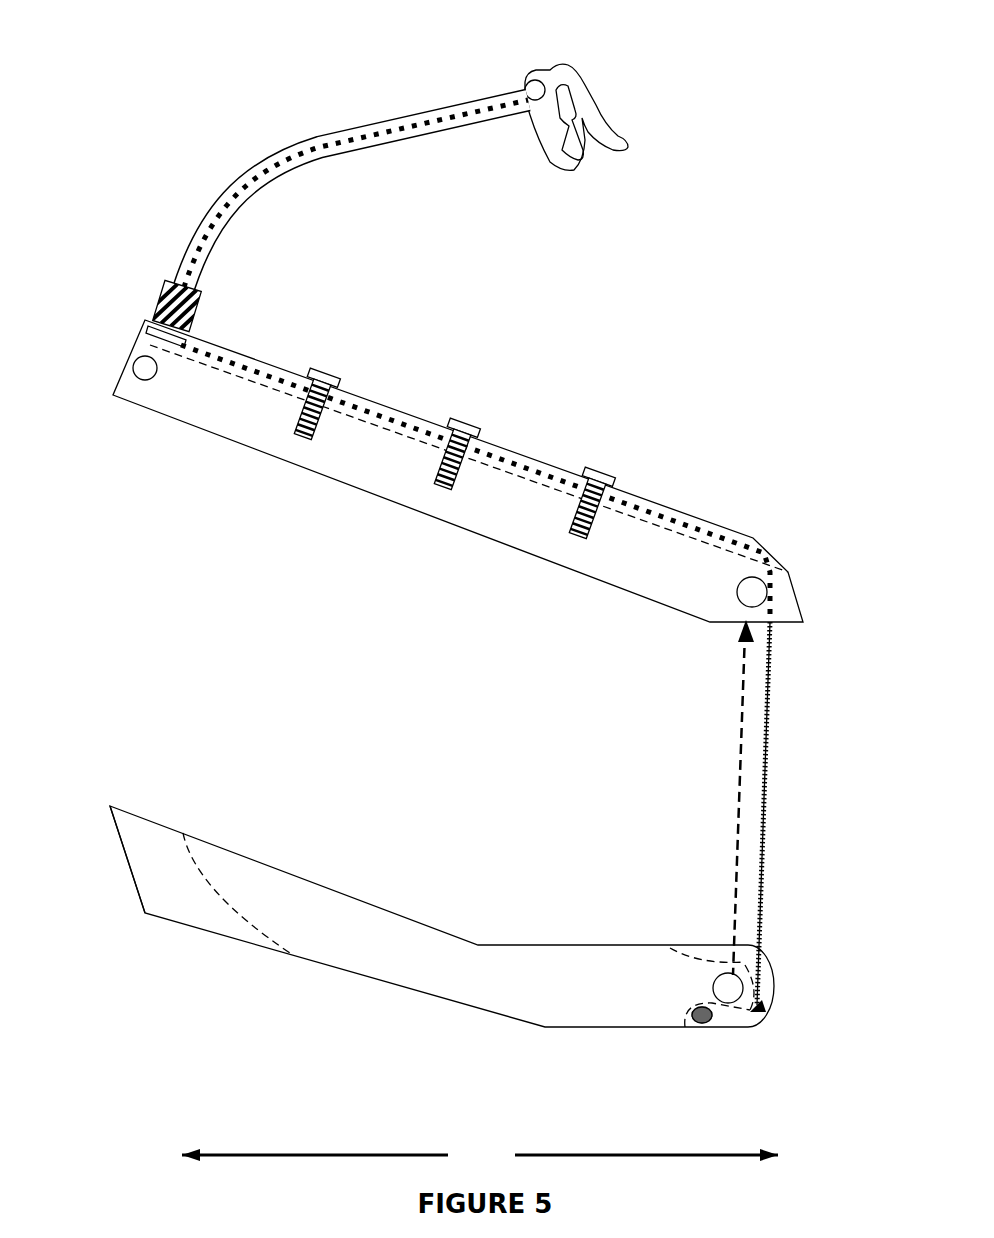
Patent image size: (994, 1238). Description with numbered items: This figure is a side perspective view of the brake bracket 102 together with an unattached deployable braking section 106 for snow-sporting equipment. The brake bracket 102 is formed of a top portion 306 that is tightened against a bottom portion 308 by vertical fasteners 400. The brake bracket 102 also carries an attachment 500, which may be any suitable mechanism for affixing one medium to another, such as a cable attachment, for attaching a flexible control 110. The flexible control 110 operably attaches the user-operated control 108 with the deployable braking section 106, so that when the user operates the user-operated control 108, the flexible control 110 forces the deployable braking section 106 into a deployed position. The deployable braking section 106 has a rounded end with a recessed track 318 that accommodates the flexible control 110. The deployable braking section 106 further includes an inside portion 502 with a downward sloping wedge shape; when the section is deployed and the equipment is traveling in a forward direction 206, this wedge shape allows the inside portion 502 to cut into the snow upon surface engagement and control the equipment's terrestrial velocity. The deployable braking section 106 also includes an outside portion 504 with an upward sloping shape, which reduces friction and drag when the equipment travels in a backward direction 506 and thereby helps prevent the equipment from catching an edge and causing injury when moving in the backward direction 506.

The brake bracket 102 is at (132, 284).
The deployable braking section 106 is at (542, 980).
The user-operated control 108 is at (586, 81).
The flexible control 110 is at (768, 838).
The forward direction 206 is at (655, 1153).
The top portion 306 is at (571, 466).
The bottom portion 308 is at (485, 510).
The recessed track 318 is at (756, 1014).
The vertical fasteners 400 is at (462, 418).
The attachment 500 is at (200, 302).
The inside portion 502 is at (260, 925).
The outside portion 504 is at (127, 874).
The backward direction 506 is at (350, 1153).